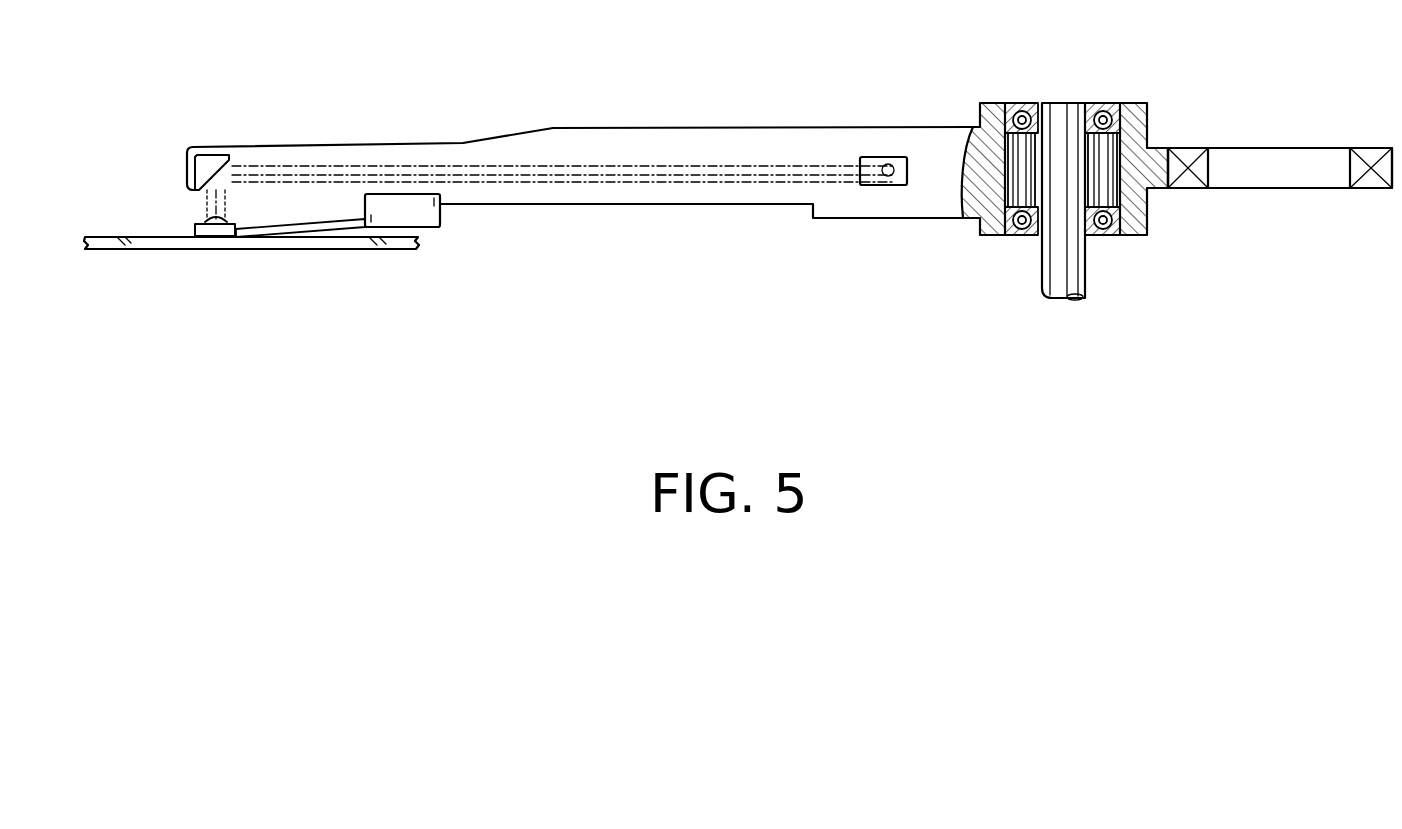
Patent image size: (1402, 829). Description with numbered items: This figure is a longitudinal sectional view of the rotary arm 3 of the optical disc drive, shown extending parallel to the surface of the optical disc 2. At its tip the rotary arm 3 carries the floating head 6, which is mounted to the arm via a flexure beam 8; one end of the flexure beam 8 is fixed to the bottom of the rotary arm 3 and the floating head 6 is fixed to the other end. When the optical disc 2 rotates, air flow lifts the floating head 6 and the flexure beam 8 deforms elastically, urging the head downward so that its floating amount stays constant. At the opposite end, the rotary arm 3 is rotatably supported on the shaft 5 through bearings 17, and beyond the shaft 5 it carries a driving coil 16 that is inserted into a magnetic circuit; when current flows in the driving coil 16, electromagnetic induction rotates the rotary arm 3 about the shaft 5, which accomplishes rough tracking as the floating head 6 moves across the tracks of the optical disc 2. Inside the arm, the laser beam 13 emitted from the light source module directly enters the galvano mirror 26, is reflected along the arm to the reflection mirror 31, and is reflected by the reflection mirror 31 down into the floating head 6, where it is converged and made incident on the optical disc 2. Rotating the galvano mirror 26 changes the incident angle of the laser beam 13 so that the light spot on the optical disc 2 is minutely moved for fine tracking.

The optical disc 2 is at (176, 250).
The rotary arm 3 is at (607, 110).
The shaft 5 is at (1074, 104).
The floating head 6 is at (157, 224).
The flexure beam 8 is at (304, 250).
The laser beam 13 is at (302, 160).
The driving coil 16 is at (1197, 148).
The bearings 17 is at (1012, 104).
The galvano mirror 26 is at (880, 165).
The reflection mirror 31 is at (205, 162).